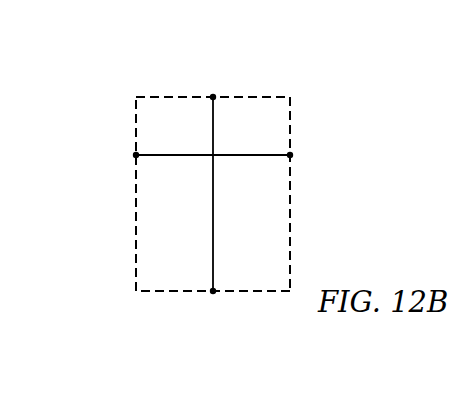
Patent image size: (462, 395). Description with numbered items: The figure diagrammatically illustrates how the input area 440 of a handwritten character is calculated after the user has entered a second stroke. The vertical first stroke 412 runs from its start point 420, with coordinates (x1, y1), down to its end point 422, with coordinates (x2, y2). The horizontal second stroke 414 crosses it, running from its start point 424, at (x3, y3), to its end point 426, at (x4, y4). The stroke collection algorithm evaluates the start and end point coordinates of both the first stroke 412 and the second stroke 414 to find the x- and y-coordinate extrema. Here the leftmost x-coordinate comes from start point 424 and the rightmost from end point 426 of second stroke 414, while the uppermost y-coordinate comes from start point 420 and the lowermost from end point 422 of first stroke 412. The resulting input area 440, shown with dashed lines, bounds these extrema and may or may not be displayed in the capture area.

The input area 440 is at (130, 119).
The second stroke 414 is at (180, 155).
The first stroke 412 is at (212, 215).
The start point 420 is at (213, 97).
The end point 422 is at (213, 291).
The start point 424 is at (136, 155).
The end point 426 is at (290, 155).